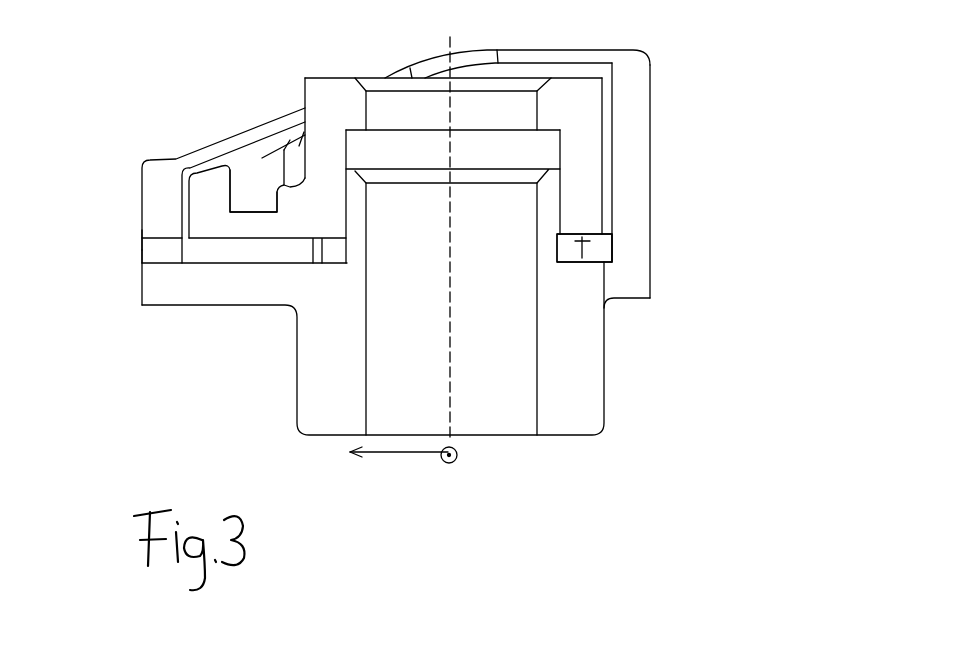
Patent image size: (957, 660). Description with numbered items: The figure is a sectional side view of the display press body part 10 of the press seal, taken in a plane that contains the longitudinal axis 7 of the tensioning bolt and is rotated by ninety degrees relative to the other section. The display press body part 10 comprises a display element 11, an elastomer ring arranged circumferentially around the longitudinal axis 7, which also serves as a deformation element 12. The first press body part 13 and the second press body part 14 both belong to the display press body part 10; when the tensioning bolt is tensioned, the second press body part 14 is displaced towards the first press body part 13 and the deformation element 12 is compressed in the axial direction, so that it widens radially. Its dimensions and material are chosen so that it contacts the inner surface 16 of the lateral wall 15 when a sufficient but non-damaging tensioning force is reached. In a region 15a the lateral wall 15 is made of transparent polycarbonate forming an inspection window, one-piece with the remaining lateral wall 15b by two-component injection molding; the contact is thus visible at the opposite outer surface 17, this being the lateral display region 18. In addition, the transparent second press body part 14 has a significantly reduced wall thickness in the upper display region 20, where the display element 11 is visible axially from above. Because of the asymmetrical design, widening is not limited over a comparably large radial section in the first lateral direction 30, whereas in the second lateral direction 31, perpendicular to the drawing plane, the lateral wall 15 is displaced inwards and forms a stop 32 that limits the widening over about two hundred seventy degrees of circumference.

The longitudinal axis 7 is at (492, 490).
The display press body part 10 is at (723, 35).
The display element 11 is at (678, 243).
The deformation element 12 is at (678, 243).
The first press body part 13 is at (643, 360).
The second press body part 14 is at (677, 145).
The lateral wall 15 is at (702, 180).
The transparent region of the lateral wall 15a is at (105, 338).
The remaining lateral wall 15b is at (150, 185).
The inner surface 16 is at (197, 347).
The outer surface 17 is at (110, 180).
The lateral display region 18 is at (83, 275).
The upper display region 20 is at (250, 190).
The first lateral direction 30 is at (395, 497).
The second lateral direction 31 is at (438, 496).
The stop 32 is at (660, 308).